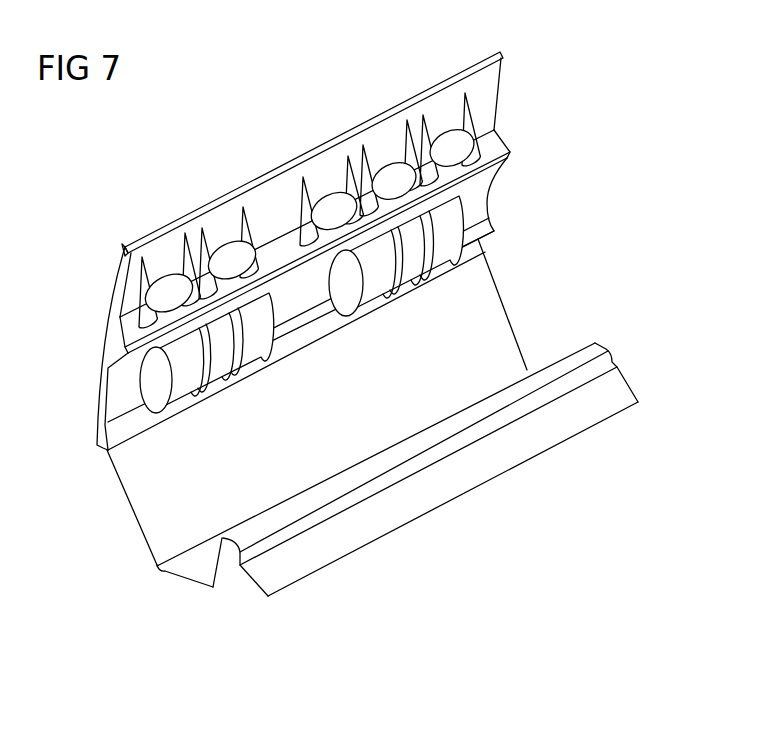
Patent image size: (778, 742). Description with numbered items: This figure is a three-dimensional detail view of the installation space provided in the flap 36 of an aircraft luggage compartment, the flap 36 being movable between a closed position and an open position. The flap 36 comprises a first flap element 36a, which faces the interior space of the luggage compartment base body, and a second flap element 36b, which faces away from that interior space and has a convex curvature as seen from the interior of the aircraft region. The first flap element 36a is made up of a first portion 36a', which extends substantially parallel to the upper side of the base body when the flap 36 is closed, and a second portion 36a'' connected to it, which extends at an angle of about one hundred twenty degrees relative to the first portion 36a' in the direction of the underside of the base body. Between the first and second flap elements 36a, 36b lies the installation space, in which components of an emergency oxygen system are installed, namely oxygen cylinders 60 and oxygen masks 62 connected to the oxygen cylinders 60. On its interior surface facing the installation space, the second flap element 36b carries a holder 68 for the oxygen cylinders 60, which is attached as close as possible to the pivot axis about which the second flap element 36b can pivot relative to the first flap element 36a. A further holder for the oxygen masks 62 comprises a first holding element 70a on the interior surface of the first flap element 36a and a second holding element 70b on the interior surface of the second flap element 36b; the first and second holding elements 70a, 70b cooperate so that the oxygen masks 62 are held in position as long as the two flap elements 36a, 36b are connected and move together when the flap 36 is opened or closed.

The flap 36 is at (574, 237).
The first flap element 36a is at (351, 362).
The first portion 36a' is at (131, 542).
The second portion 36a'' is at (253, 592).
The second flap element 36b is at (320, 146).
The oxygen cylinders 60 is at (407, 277).
The oxygen masks 62 is at (168, 278).
The holder 68 is at (100, 388).
The first holding element 70a is at (597, 342).
The second holding element 70b is at (483, 118).